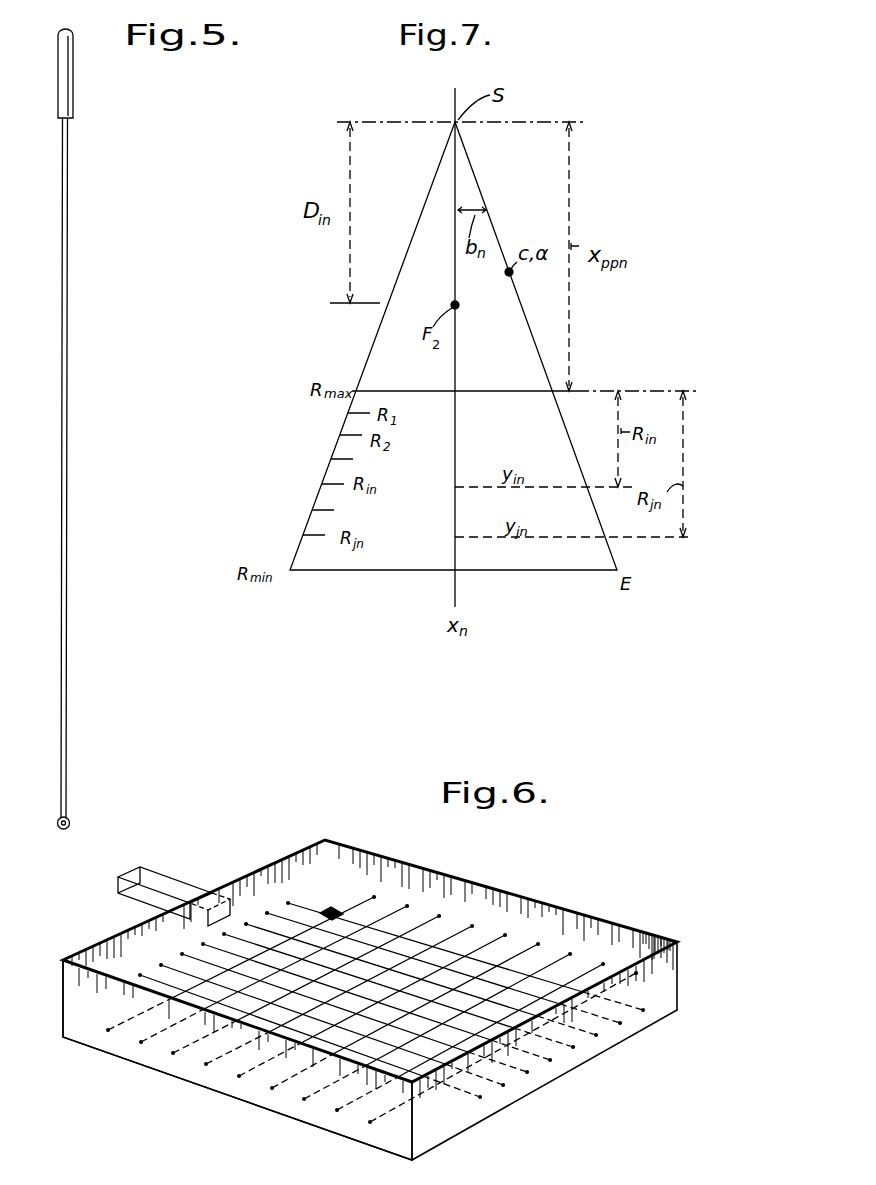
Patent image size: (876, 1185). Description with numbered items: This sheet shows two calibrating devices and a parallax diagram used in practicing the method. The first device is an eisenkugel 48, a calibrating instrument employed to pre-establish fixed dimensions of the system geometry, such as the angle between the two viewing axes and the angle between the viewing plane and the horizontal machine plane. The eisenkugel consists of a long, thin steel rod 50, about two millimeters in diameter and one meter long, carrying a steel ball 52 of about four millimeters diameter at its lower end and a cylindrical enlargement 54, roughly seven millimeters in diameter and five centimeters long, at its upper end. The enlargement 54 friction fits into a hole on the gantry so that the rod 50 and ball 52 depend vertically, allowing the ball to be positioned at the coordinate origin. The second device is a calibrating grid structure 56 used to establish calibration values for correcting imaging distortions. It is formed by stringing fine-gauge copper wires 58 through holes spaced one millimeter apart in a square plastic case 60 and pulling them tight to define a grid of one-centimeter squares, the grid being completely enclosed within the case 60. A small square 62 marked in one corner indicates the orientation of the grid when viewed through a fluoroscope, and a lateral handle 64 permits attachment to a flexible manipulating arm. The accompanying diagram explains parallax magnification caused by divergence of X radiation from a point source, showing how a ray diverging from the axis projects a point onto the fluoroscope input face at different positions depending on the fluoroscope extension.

In FIG. 5, the eisenkugel 48 is at (93, 429).
In FIG. 5, the steel rod 50 is at (67, 390).
In FIG. 5, the steel ball 52 is at (68, 818).
In FIG. 5, the cylindrical enlargement 54 is at (73, 110).
In FIG. 6, the calibrating grid structure 56 is at (435, 864).
In FIG. 6, the copper wires 58 is at (484, 945).
In FIG. 6, the plastic case 60 is at (62, 1006).
In FIG. 6, the small square 62 is at (333, 908).
In FIG. 6, the lateral handle 64 is at (190, 893).